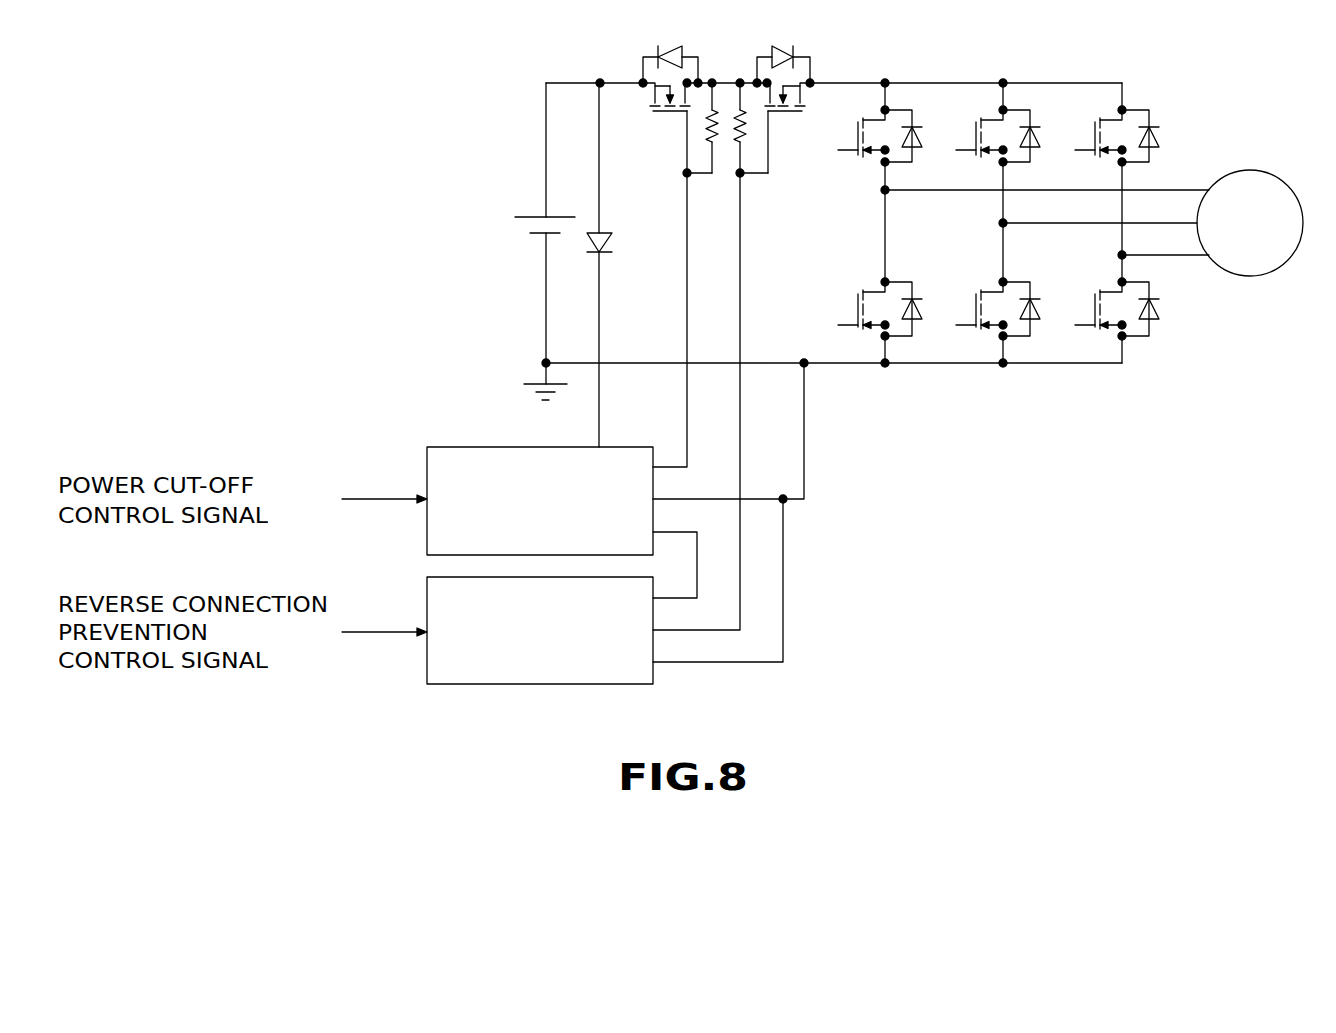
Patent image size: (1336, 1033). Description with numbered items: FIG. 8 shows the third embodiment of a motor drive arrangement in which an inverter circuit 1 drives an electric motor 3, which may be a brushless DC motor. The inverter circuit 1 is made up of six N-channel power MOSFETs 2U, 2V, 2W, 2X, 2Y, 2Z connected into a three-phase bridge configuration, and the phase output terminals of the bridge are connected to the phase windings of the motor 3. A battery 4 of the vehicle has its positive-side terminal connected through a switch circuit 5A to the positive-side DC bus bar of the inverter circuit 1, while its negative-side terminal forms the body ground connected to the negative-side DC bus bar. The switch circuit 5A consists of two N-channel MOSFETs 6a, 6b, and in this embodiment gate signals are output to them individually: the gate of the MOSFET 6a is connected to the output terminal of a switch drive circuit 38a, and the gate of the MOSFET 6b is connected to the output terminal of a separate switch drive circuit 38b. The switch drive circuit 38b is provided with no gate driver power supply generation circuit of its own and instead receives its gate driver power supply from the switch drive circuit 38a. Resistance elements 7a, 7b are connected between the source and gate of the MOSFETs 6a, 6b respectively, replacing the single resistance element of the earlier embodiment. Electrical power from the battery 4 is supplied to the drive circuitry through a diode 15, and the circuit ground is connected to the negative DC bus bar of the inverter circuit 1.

The inverter circuit 1 is at (998, 183).
The electric motor 3 is at (1290, 270).
The battery 4 is at (515, 230).
The switch circuit 5A is at (717, 135).
The N-channel MOSFET 6a is at (670, 118).
The N-channel MOSFET 6b is at (790, 113).
The resistance element 7a is at (722, 140).
The resistance element 7b is at (758, 140).
The diode 15 is at (586, 248).
The power MOSFET 2U is at (858, 165).
The power MOSFET 2V is at (974, 160).
The power MOSFET 2W is at (1094, 160).
The power MOSFET 2X is at (858, 290).
The power MOSFET 2Y is at (976, 292).
The power MOSFET 2Z is at (1095, 295).
The switch drive circuit 38a is at (474, 447).
The switch drive circuit 38b is at (484, 686).